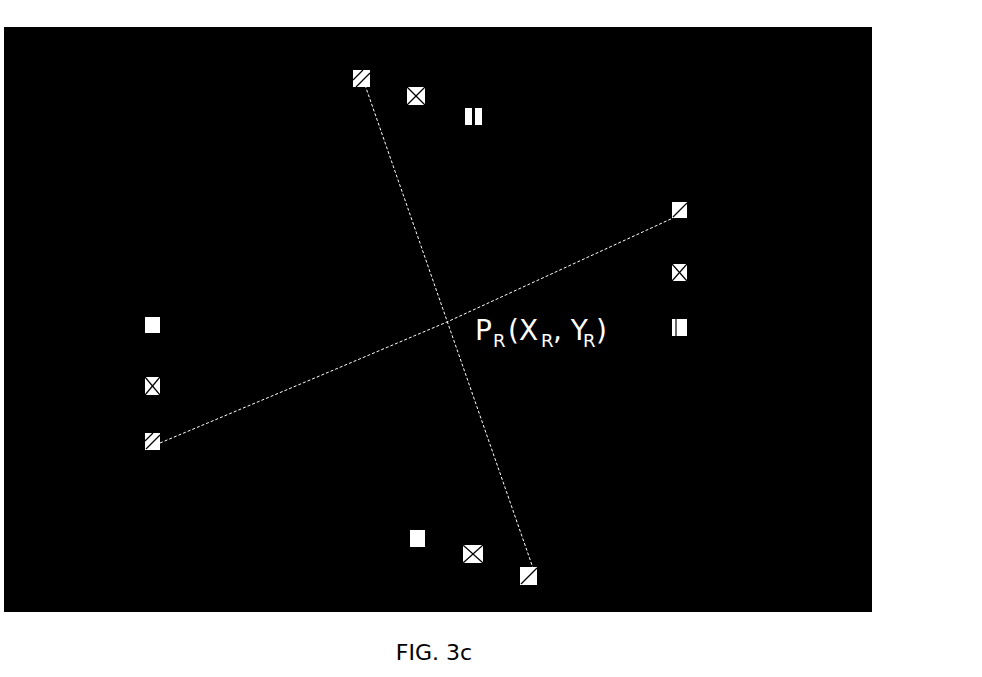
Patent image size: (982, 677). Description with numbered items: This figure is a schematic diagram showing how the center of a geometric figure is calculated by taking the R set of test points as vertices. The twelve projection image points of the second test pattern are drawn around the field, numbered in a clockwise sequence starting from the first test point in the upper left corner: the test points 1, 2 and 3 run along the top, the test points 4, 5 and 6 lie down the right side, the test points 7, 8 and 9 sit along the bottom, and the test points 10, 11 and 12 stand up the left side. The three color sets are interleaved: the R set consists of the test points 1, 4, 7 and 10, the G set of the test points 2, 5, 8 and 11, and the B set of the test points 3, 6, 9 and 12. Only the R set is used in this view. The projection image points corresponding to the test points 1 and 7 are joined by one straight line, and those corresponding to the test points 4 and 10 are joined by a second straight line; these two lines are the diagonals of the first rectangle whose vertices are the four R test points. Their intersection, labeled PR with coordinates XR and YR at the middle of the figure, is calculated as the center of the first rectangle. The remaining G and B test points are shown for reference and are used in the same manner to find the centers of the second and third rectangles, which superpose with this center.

The test point 1 is at (367, 60).
The test point 2 is at (427, 81).
The test point 3 is at (484, 99).
The test point 4 is at (700, 206).
The test point 5 is at (700, 274).
The test point 6 is at (700, 329).
The test point 7 is at (527, 592).
The test point 8 is at (471, 571).
The test point 9 is at (415, 553).
The test point 10 is at (121, 439).
The test point 11 is at (121, 379).
The test point 12 is at (121, 317).